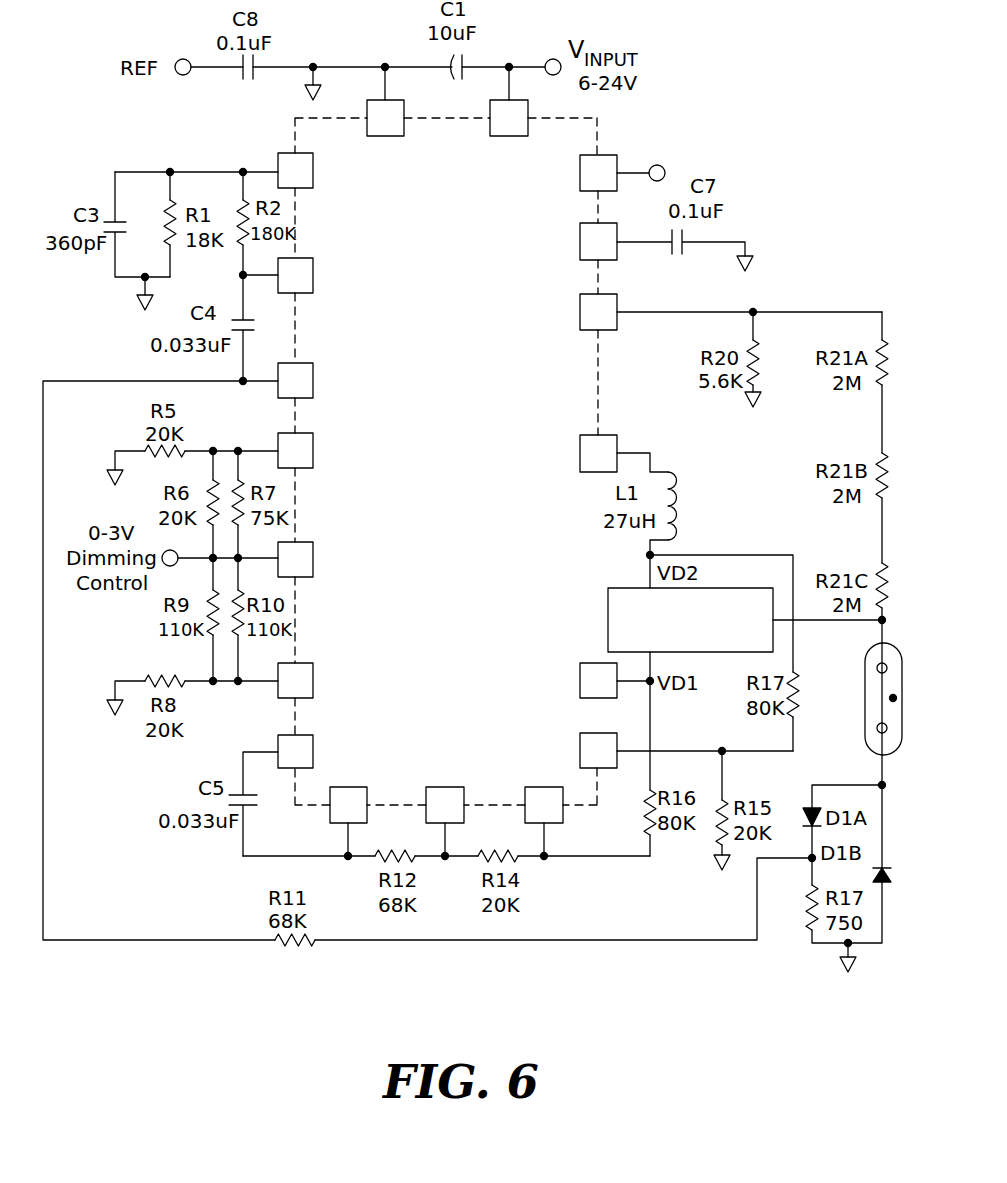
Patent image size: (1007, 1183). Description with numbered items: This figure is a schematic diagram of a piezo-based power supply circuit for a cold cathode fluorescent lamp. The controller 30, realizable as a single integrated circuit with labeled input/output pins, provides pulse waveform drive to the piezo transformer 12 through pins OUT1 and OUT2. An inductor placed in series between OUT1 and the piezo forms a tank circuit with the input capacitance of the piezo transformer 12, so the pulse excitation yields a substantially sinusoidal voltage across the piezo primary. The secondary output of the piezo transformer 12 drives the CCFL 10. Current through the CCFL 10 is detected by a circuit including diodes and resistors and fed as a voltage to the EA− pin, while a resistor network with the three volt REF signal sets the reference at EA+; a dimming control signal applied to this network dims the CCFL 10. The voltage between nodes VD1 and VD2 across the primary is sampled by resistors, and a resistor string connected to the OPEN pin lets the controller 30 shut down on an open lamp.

The cold cathode fluorescent lamp 10 is at (865, 698).
The piezo transformer 12 is at (736, 588).
The controller 30 is at (472, 557).